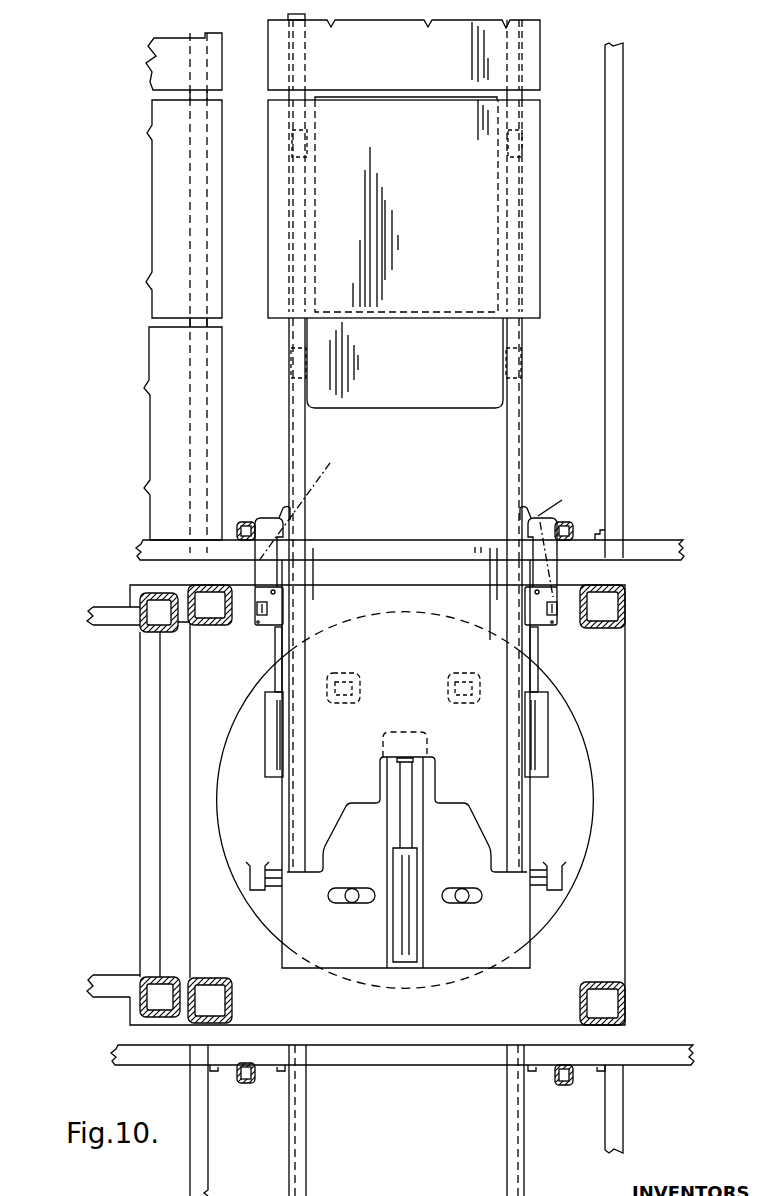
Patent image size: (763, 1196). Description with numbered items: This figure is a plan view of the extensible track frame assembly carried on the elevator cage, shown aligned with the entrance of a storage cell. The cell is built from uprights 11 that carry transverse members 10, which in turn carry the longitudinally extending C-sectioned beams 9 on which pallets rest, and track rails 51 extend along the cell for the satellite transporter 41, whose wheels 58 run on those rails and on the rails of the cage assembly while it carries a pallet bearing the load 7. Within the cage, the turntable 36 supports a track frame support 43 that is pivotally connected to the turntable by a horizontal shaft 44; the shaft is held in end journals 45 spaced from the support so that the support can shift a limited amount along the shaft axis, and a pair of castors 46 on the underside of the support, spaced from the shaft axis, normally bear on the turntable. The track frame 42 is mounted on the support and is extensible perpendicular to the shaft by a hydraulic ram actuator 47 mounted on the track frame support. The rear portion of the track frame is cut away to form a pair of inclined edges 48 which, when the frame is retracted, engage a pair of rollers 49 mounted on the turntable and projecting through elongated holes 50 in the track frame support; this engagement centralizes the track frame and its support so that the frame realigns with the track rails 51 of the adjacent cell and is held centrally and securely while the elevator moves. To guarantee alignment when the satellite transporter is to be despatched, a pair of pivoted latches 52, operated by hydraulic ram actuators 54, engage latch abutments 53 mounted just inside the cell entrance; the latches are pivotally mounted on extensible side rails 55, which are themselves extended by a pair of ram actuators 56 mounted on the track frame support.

The load 7 is at (404, 166).
The C-sectioned beams 9 is at (608, 293).
The transverse members 10 is at (647, 540).
The uprights 11 is at (567, 1087).
The turntable 36 is at (262, 912).
The satellite transporter 41 is at (395, 410).
The track frame 42 is at (297, 798).
The track frame support 43 is at (532, 828).
The horizontal shaft 44 is at (280, 872).
The end journals 45 is at (253, 873).
The castors 46 is at (447, 683).
The hydraulic ram actuator 47 is at (413, 927).
The inclined edges 48 is at (337, 823).
The rollers 49 is at (347, 905).
The elongated holes 50 is at (363, 903).
The track rails 51 is at (505, 445).
The pivoted latches 52 is at (265, 518).
The latch abutments 53 is at (287, 527).
The hydraulic ram actuators 54 is at (253, 607).
The extensible side rails 55 is at (283, 605).
The ram actuators 56 is at (268, 702).
The wheels 58 is at (293, 353).